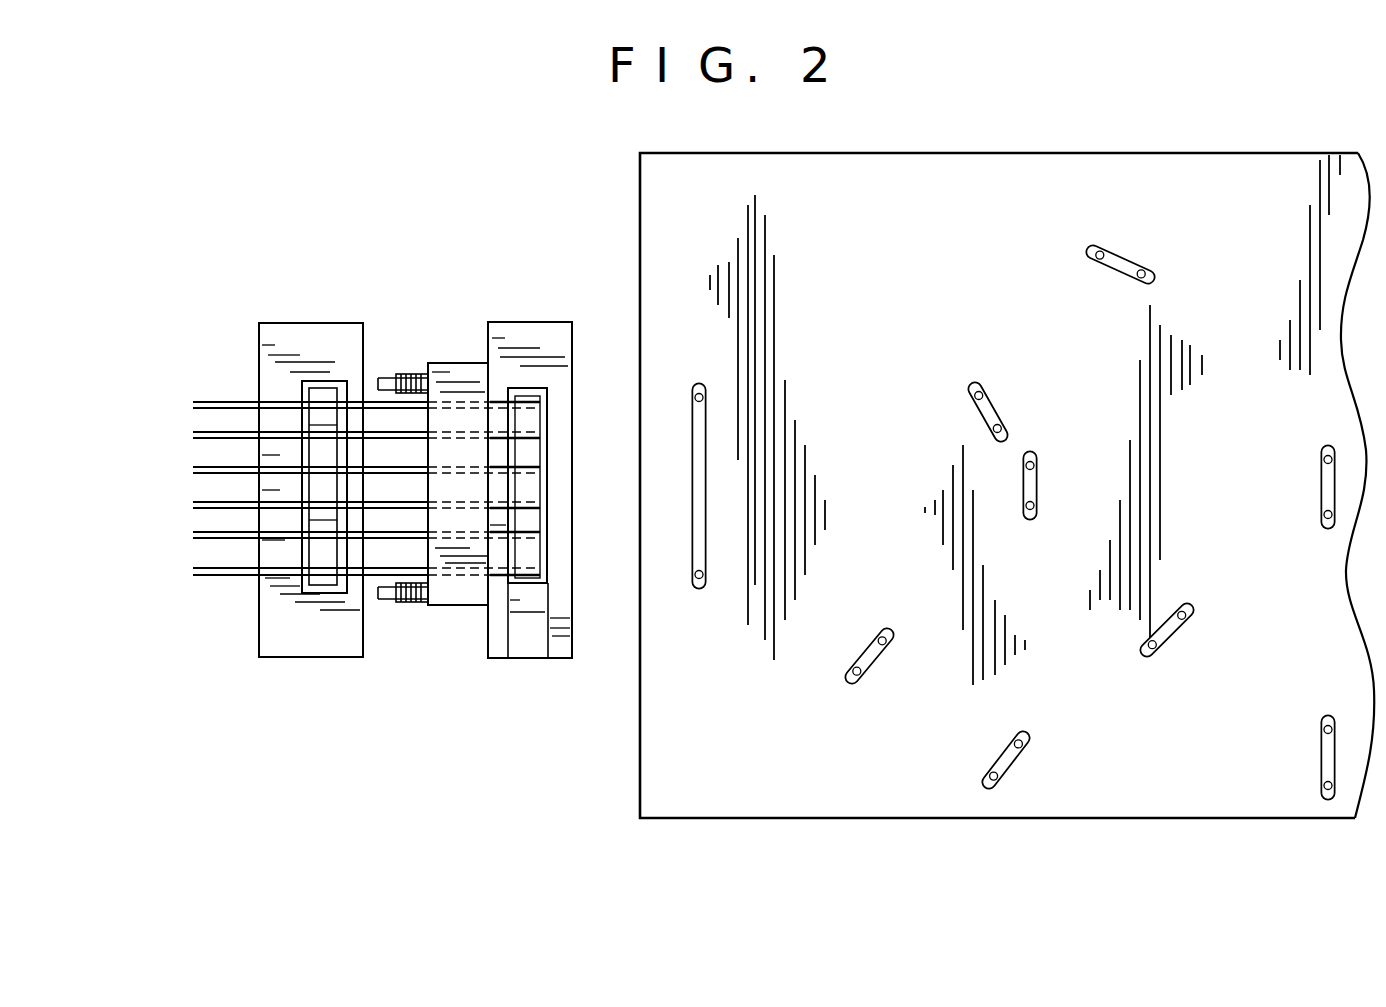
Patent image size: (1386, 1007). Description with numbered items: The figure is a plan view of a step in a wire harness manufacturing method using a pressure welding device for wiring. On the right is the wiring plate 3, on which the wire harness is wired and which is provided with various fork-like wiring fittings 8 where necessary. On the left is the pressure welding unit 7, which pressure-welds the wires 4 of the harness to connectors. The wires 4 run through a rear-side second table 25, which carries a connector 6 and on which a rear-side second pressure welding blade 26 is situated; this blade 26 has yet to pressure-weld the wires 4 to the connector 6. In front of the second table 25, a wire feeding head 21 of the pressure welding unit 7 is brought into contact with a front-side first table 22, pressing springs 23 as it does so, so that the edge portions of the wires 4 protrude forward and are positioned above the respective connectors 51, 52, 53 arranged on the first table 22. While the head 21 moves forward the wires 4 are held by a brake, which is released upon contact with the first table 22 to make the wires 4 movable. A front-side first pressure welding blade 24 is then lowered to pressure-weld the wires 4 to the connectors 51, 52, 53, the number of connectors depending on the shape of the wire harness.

The wiring plate 3 is at (797, 820).
The wires 4 is at (220, 398).
The connector 51 is at (545, 401).
The connector 52 is at (550, 488).
The connector 53 is at (548, 553).
The connector 6 is at (332, 378).
The pressure welding unit 7 is at (437, 345).
The fork-like wiring fittings 8 is at (1000, 760).
The wire feeding head 21 is at (462, 607).
The first table 22 is at (555, 660).
The springs 23 is at (410, 604).
The first pressure welding blade 24 is at (533, 422).
The second table 25 is at (280, 658).
The second pressure welding blade 26 is at (323, 400).